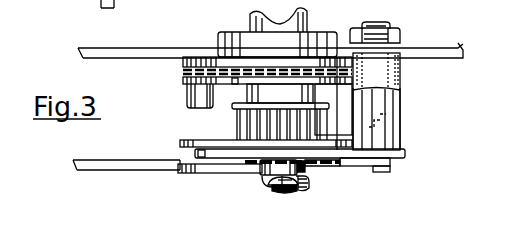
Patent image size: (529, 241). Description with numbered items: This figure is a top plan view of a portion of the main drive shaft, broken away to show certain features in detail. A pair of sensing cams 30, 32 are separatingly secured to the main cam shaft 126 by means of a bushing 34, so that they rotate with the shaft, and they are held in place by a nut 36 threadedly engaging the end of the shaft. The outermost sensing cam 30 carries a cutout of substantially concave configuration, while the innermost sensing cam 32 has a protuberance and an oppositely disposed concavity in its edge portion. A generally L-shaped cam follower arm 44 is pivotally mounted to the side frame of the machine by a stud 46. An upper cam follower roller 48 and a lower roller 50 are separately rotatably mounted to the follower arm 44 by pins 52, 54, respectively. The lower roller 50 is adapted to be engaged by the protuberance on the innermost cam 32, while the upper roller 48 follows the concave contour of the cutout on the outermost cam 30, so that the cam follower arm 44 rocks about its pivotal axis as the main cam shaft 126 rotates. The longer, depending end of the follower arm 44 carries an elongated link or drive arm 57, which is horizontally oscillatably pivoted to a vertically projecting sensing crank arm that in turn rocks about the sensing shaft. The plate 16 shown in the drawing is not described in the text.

The upper plate 16 is at (444, 54).
The main cam shaft 126 is at (309, 18).
The innermost sensing cam 32 is at (228, 139).
The cam follower arm 44 is at (405, 155).
The outermost sensing cam 30 is at (207, 175).
The elongated link or drive arm 57 is at (126, 160).
The upper cam follower roller 48 is at (258, 175).
The pin 52 is at (275, 189).
The nut 36 is at (300, 189).
The bushing 34 is at (320, 160).
The pin 54 is at (397, 117).
The lower cam follower roller 50 is at (403, 143).
The stud 46 is at (386, 172).